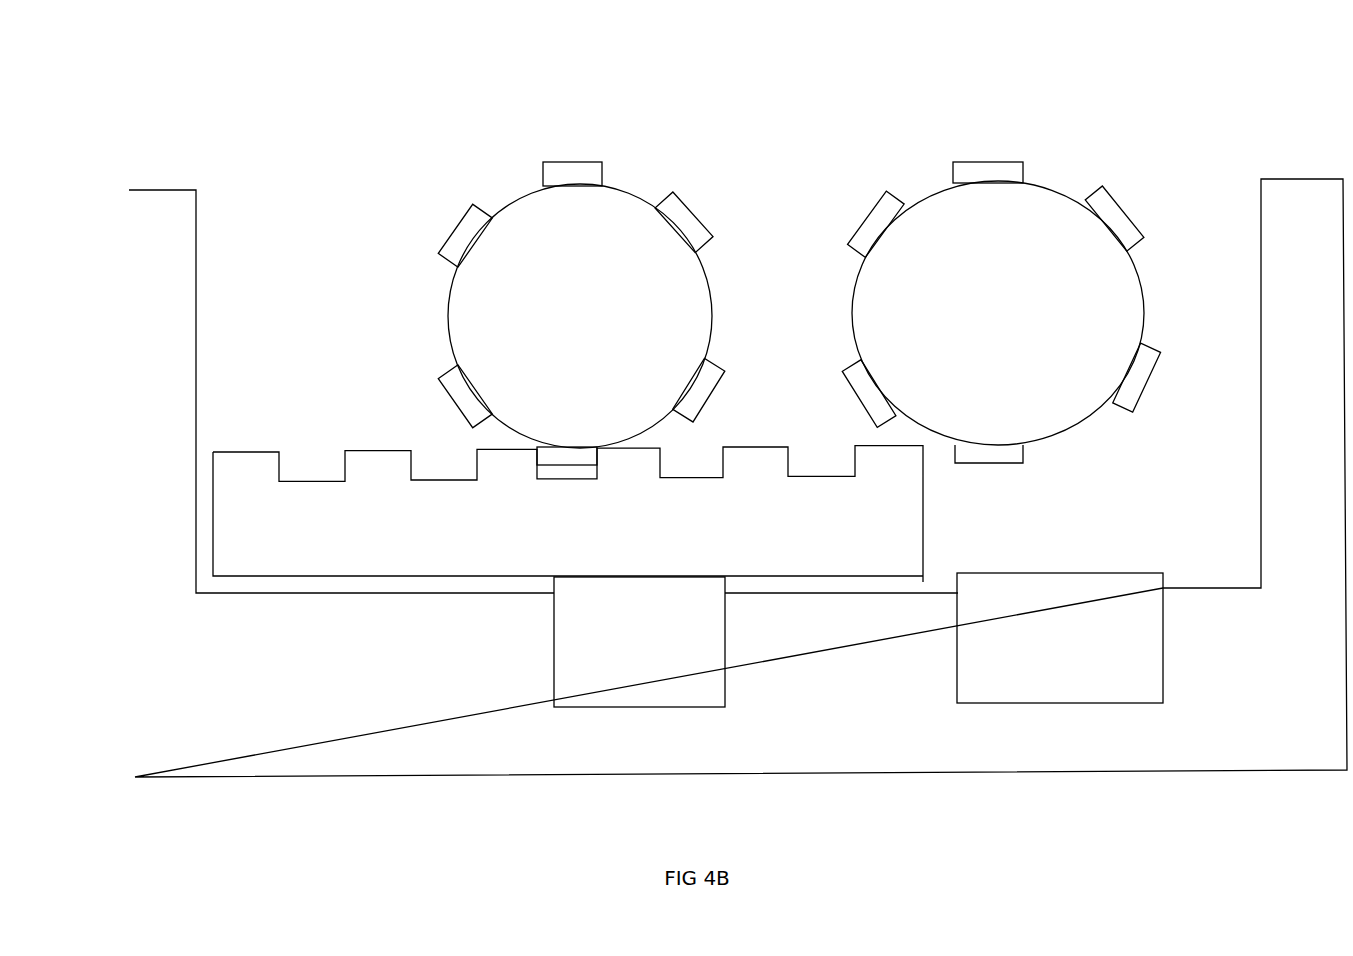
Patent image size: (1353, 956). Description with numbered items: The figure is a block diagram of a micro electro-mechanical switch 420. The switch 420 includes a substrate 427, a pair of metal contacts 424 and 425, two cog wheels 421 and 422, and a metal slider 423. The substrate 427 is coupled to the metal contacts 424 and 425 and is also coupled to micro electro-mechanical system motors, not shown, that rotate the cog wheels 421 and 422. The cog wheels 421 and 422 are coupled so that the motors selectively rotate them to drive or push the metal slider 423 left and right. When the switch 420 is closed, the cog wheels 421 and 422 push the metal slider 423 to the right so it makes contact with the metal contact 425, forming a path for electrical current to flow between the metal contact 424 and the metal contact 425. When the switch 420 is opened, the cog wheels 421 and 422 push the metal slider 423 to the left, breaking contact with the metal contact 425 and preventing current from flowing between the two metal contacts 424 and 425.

The micro electro-mechanical switch 420 is at (715, 45).
The cog wheel 421 is at (581, 313).
The cog wheel 422 is at (1001, 312).
The metal slider 423 is at (568, 514).
The metal contact 424 is at (639, 642).
The metal contact 425 is at (1060, 638).
The substrate 427 is at (738, 478).